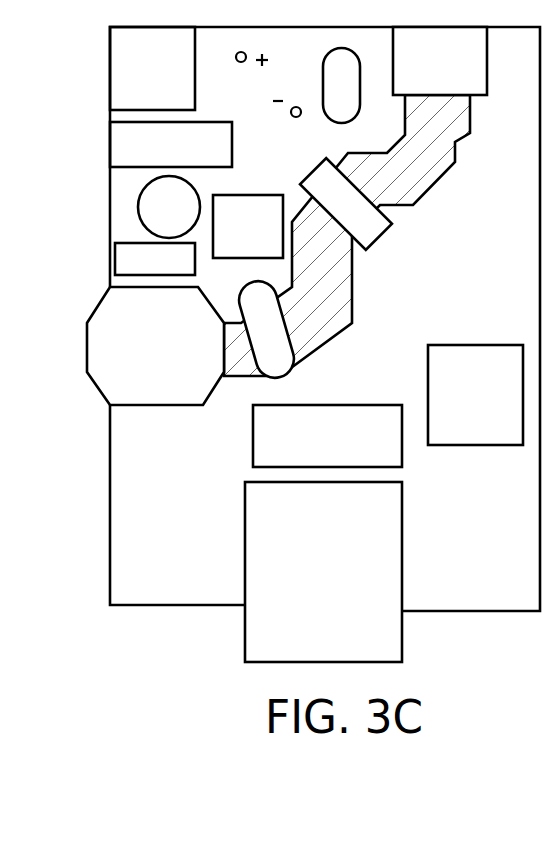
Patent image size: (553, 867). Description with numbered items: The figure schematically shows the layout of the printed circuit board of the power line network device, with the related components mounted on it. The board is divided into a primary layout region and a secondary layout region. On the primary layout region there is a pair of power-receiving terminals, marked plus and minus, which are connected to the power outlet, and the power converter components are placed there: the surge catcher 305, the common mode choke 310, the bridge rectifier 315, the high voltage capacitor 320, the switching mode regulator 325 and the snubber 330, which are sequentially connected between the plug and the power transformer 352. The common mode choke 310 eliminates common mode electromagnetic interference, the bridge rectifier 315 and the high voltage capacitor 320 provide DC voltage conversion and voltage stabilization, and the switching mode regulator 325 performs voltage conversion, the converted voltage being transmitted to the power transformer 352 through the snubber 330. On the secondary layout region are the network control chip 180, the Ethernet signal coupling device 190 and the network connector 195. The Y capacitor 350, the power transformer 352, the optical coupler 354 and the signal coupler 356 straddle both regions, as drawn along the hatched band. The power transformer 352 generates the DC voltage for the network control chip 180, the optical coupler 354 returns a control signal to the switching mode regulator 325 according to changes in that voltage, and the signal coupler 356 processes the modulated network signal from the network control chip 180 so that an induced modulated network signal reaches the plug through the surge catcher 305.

The network control chip 180 is at (455, 436).
The Ethernet signal coupling device 190 is at (271, 460).
The network connector 195 is at (268, 648).
The surge catcher 305 is at (341, 85).
The common mode choke 310 is at (130, 104).
The bridge rectifier 315 is at (136, 162).
The high voltage capacitor 320 is at (147, 220).
The switching mode regulator 325 is at (226, 238).
The snubber 330 is at (135, 272).
The Y capacitor 350 is at (267, 330).
The power transformer 352 is at (133, 394).
The optical coupler 354 is at (346, 204).
The signal coupler 356 is at (426, 86).